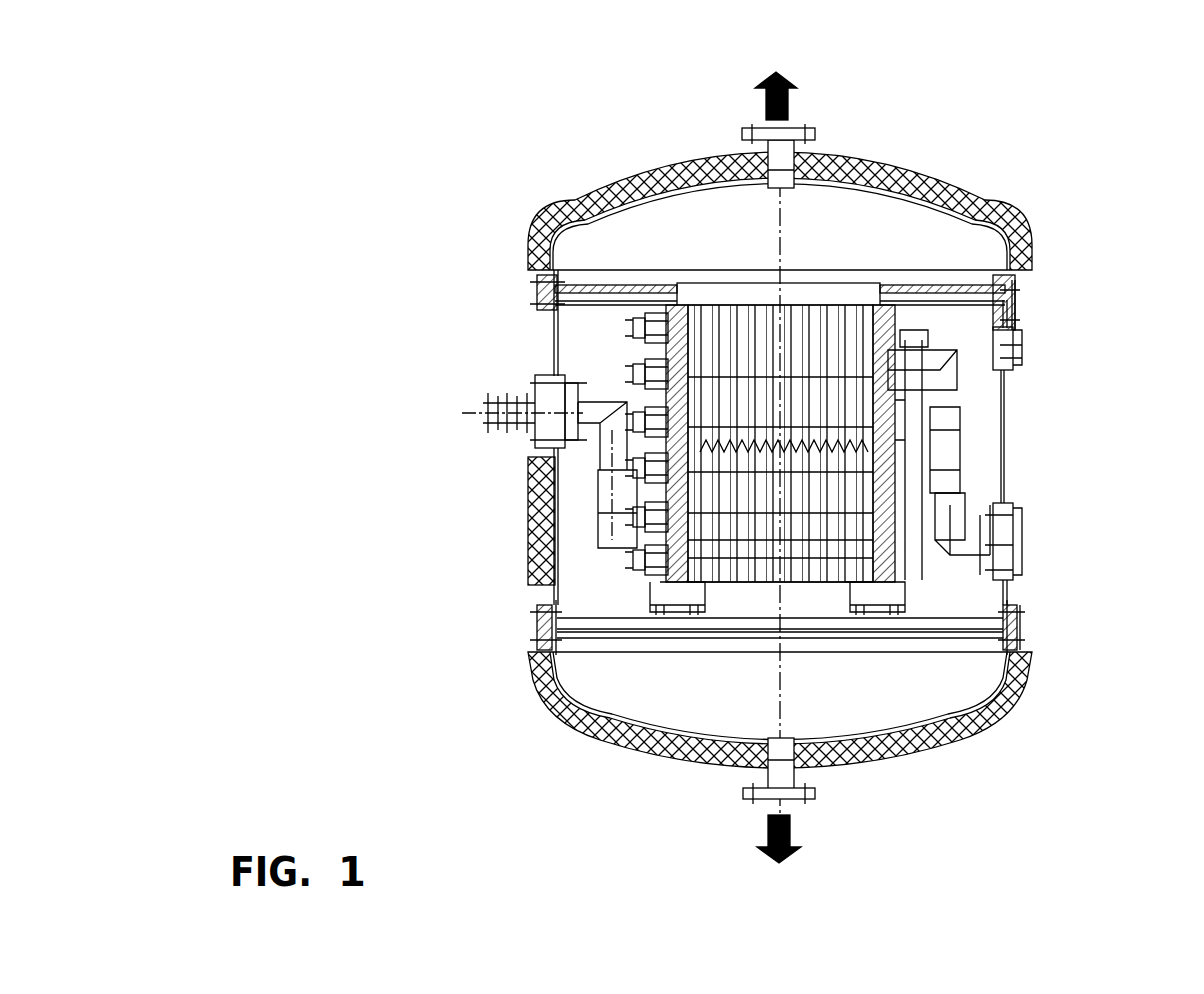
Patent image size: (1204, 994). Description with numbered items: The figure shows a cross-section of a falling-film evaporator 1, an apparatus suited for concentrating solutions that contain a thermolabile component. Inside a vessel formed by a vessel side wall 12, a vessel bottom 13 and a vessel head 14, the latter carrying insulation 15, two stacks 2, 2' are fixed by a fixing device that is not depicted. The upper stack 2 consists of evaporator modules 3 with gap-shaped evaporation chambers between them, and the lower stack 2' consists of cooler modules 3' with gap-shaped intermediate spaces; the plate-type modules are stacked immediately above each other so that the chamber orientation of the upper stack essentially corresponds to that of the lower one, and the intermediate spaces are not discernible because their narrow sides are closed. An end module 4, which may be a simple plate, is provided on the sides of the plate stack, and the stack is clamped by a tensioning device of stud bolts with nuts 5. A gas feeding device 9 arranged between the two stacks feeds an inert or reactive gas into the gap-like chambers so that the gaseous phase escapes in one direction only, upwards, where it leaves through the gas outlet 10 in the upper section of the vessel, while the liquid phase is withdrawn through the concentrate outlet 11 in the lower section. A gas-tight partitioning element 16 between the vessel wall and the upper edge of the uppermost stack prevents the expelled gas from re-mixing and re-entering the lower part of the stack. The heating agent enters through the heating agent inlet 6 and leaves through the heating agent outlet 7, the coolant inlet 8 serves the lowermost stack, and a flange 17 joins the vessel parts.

The falling-film evaporator 1 is at (955, 140).
The stack 2 is at (802, 327).
The stack 2' is at (846, 727).
The evaporator module 3 is at (780, 316).
The cooler module 3' is at (807, 714).
The end module 4 is at (865, 503).
The stud bolt with nut 5 is at (632, 335).
The heating agent inlet 6 is at (912, 410).
The heating agent outlet 7 is at (943, 378).
The coolant inlet 8 is at (610, 540).
The gas feeding device 9 is at (708, 443).
The gas outlet 10 is at (778, 119).
The concentrate outlet 11 is at (779, 819).
The vessel side wall 12 is at (1002, 452).
The vessel bottom 13 is at (997, 687).
The vessel head 14 is at (928, 203).
The insulation 15 is at (993, 223).
The partitioning element 16 is at (610, 290).
The flange 17 is at (1023, 625).